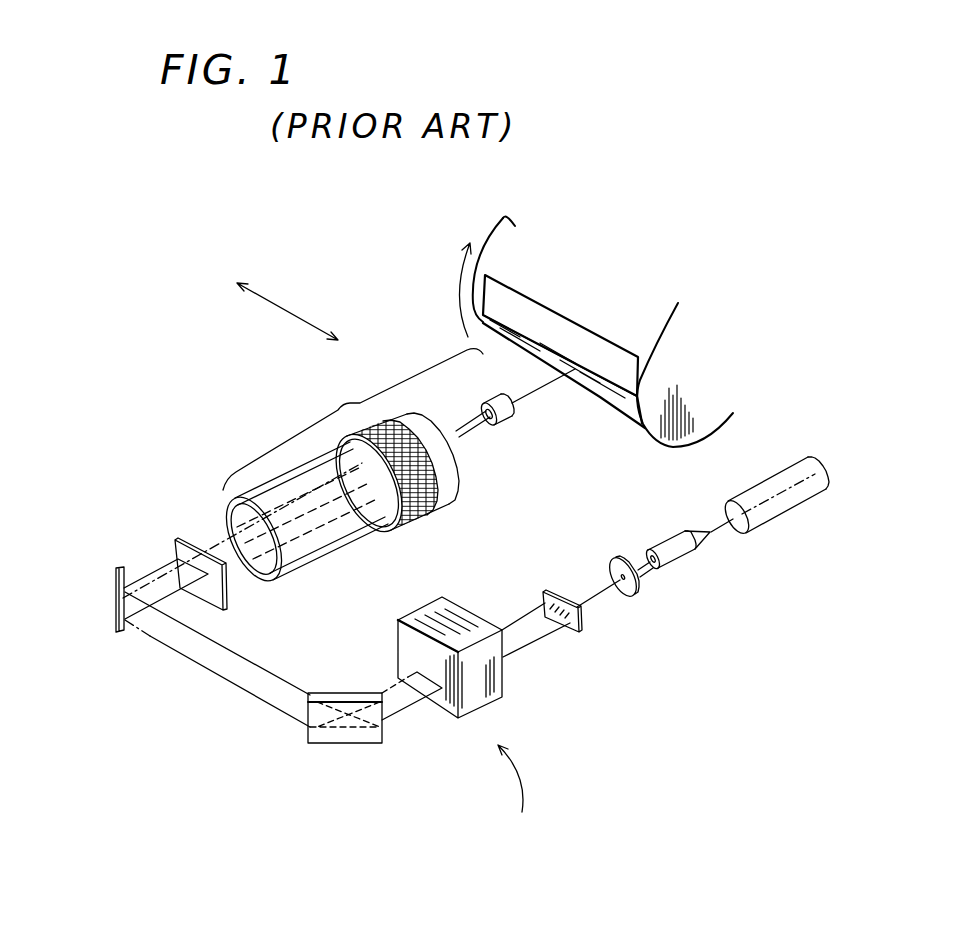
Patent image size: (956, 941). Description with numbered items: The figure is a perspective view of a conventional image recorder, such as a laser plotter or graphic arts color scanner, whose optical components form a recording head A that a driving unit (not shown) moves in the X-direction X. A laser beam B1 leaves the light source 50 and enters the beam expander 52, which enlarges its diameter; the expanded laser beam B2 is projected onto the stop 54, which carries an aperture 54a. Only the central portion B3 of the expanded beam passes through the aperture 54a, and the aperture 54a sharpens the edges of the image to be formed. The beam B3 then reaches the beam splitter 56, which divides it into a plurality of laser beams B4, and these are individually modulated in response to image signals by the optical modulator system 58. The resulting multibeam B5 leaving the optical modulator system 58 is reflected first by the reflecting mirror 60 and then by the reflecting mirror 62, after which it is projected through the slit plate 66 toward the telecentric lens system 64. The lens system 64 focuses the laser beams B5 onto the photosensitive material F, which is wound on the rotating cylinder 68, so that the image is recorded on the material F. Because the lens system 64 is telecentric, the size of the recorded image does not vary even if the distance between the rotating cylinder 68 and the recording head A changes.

The light source 50 is at (755, 487).
The beam expander 52 is at (670, 547).
The stop 54 is at (618, 560).
The aperture 54a is at (628, 596).
The beam splitter 56 is at (548, 587).
The optical modulator system 58 is at (423, 605).
The reflecting mirror 60 is at (337, 743).
The reflecting mirror 62 is at (115, 612).
The telecentric lens system 64 is at (395, 469).
The slit plate 66 is at (193, 538).
The rotating cylinder 68 is at (712, 380).
The photosensitive material F is at (542, 300).
The X-direction X is at (271, 297).
The recording head A is at (515, 797).
The laser beam B1 is at (717, 527).
The expanded laser beam B2 is at (650, 575).
The central portion of the expanded laser beam B3 is at (596, 598).
The laser beams B4 is at (533, 640).
The multibeam B5 is at (415, 703).